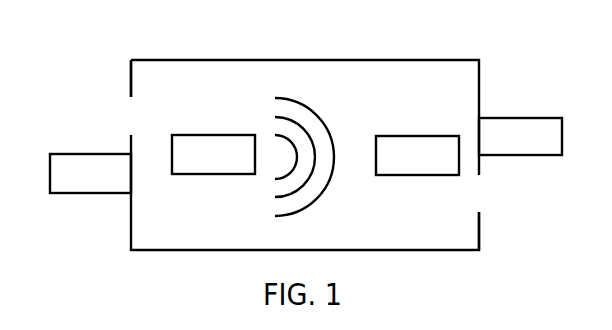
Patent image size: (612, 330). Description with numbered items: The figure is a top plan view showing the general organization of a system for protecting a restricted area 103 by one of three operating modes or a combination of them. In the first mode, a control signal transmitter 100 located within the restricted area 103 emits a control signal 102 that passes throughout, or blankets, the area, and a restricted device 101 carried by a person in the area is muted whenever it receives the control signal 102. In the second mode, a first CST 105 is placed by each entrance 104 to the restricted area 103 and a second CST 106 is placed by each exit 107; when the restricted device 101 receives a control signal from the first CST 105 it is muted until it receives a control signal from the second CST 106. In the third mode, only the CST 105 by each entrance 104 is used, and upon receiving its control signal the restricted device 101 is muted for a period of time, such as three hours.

The control signal transmitter 100 is at (213, 154).
The restricted device 101 is at (417, 155).
The control signal 102 is at (307, 157).
The restricted area 103 is at (351, 57).
The entrance 104 is at (130, 97).
The first CST 105 is at (90, 173).
The second CST 106 is at (520, 136).
The exit 107 is at (479, 212).